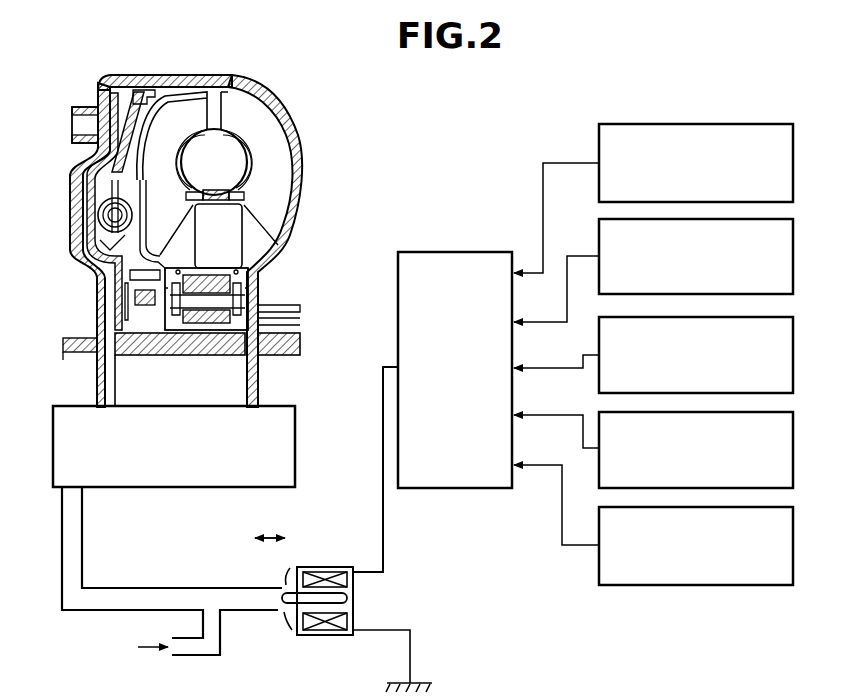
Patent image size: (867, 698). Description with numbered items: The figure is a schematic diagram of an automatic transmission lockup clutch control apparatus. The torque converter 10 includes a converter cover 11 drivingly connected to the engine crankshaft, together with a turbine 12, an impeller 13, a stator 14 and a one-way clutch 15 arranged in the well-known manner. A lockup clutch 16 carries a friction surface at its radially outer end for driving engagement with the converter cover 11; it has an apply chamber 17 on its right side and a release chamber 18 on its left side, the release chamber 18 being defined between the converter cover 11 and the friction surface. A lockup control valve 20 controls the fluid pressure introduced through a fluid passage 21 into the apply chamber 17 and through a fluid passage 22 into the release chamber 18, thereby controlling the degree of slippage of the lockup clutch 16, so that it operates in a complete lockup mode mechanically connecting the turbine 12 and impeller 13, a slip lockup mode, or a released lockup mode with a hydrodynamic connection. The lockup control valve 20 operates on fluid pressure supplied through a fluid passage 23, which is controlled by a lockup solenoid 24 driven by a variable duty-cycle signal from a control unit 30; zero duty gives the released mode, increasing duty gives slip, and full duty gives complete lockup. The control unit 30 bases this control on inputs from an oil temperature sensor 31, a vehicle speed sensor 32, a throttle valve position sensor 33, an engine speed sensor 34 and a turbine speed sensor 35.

The torque converter 10 is at (285, 107).
The converter cover 11 is at (98, 95).
The turbine 12 is at (173, 123).
The impeller 13 is at (270, 150).
The stator 14 is at (222, 223).
The one-way clutch 15 is at (213, 303).
The lockup clutch 16 is at (97, 203).
The apply chamber 17 is at (218, 148).
The release chamber 18 is at (107, 288).
The lockup control valve 20 is at (295, 442).
The fluid passage 21 is at (252, 377).
The fluid passage 22 is at (107, 383).
The fluid passage 23 is at (122, 596).
The lockup solenoid 24 is at (352, 567).
The control unit 30 is at (481, 252).
The oil temperature sensor 31 is at (793, 163).
The vehicle speed sensor 32 is at (793, 256).
The throttle valve position sensor 33 is at (793, 355).
The engine speed sensor 34 is at (793, 448).
The turbine speed sensor 35 is at (793, 545).